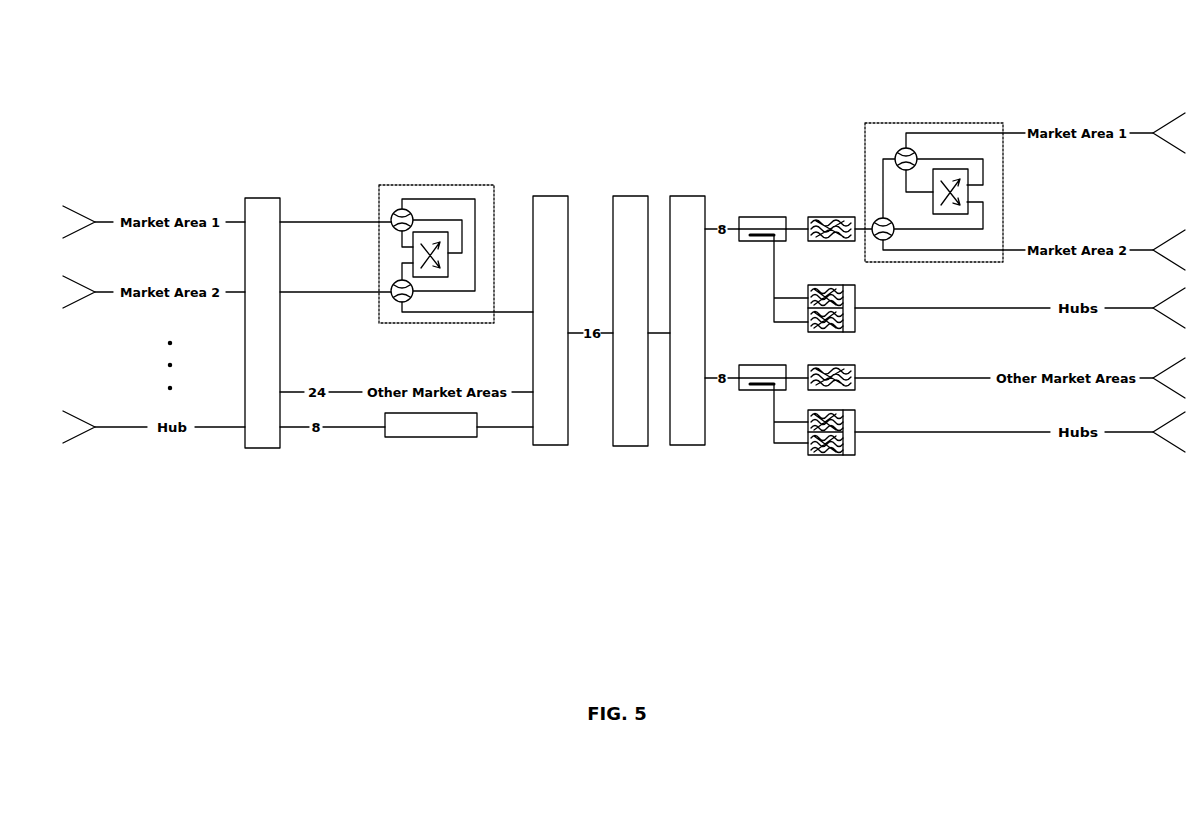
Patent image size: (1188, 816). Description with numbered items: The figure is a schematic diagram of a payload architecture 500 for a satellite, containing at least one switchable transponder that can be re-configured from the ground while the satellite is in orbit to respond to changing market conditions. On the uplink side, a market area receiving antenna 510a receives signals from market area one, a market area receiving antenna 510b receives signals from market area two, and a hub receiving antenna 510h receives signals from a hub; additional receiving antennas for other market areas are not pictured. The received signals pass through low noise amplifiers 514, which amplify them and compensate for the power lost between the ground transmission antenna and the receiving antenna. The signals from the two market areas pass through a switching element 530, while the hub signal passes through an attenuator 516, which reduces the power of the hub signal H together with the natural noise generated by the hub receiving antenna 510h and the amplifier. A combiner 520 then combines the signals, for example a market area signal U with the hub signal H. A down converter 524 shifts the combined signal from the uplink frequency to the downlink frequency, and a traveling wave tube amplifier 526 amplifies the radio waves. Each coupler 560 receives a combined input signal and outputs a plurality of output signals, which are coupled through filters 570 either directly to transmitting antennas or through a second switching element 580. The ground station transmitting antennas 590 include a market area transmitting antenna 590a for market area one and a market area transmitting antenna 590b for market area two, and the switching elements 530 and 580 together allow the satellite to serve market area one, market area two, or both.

The payload architecture 500 is at (1075, 30).
The market area receiving antenna 510a is at (88, 201).
The market area receiving antenna 510b is at (88, 313).
The hub receiving antenna 510h is at (105, 454).
The low noise amplifiers 514 is at (262, 448).
The attenuator 516 is at (431, 437).
The combiner 520 is at (551, 445).
The down converter 524 is at (631, 446).
The traveling wave tube amplifier 526 is at (688, 445).
The switching element 530 is at (435, 185).
The coupler 560 is at (762, 217).
The filters 570 is at (831, 217).
The switching element 580 is at (932, 123).
The market area transmitting antenna 590a is at (1169, 114).
The market area transmitting antenna 590b is at (1169, 232).
The ground station transmitting antennas 590 is at (1169, 447).